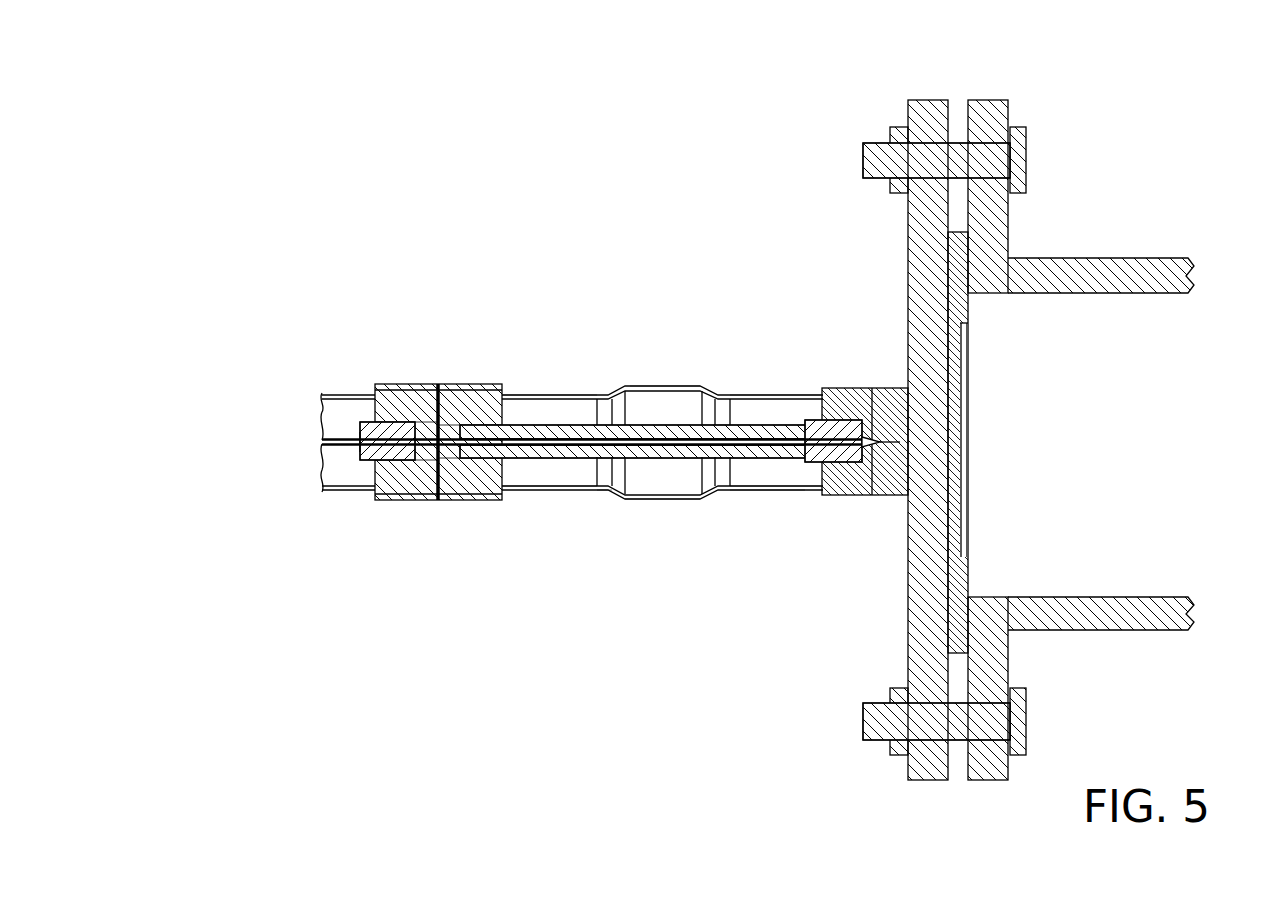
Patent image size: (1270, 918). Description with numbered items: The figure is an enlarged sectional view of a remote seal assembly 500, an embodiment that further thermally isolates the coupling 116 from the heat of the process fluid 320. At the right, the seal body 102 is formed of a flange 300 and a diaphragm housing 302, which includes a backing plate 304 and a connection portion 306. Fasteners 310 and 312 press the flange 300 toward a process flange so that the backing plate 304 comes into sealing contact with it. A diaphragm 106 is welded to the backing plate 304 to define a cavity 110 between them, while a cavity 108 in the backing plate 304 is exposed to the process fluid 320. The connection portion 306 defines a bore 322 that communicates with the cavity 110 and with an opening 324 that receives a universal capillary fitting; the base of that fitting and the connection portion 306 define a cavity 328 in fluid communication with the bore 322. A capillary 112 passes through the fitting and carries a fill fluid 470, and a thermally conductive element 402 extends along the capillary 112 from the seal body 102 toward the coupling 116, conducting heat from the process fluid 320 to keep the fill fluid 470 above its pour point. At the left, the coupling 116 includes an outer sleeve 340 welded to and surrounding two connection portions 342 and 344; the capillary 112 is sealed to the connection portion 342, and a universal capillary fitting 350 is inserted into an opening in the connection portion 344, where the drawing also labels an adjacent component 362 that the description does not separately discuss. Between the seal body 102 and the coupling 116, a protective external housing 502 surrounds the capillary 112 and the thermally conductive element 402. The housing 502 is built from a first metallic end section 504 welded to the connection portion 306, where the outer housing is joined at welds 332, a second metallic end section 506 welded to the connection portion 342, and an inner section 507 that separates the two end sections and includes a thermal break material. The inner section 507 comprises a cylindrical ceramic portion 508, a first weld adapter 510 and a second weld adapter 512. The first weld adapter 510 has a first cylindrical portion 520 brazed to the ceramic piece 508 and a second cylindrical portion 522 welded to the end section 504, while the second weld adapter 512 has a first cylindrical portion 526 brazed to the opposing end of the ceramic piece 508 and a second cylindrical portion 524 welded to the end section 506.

The remote seal assembly 500 is at (622, 358).
The external housing 502 is at (665, 400).
The fastener 312 is at (866, 155).
The seal body 102 is at (967, 440).
The diaphragm housing 302 is at (870, 356).
The cavity 110 is at (962, 365).
The diaphragm 106 is at (963, 383).
The cavity 108 is at (962, 415).
The bore 322 is at (958, 433).
The cavity 328 is at (868, 452).
The process fluid 320 is at (1150, 537).
The backing plate 304 is at (965, 595).
The flange 300 is at (908, 612).
The fastener 310 is at (862, 712).
The inner fitting 362 is at (375, 390).
The coupling 116 is at (412, 386).
The outer sleeve 340 is at (452, 388).
The second metallic end section 506 is at (588, 396).
The second cylindrical portion 524 is at (585, 394).
The first cylindrical portion 526 is at (632, 386).
The inner section 507 is at (647, 375).
The first cylindrical portion 520 is at (697, 386).
The second cylindrical portion 522 is at (740, 394).
The first metallic end section 504 is at (797, 394).
The opening 324 is at (818, 388).
The universal capillary fitting 350 is at (360, 425).
The connection portion 344 is at (418, 478).
The connection portion 342 is at (478, 484).
The thermally conductive element 402 is at (547, 460).
The fill fluid 470 is at (574, 450).
The second weld adapter 512 is at (600, 490).
The cylindrical ceramic portion 508 is at (648, 500).
The first weld adapter 510 is at (703, 497).
The capillary 112 is at (760, 490).
The welds 332 is at (822, 494).
The connection portion 306 is at (880, 494).